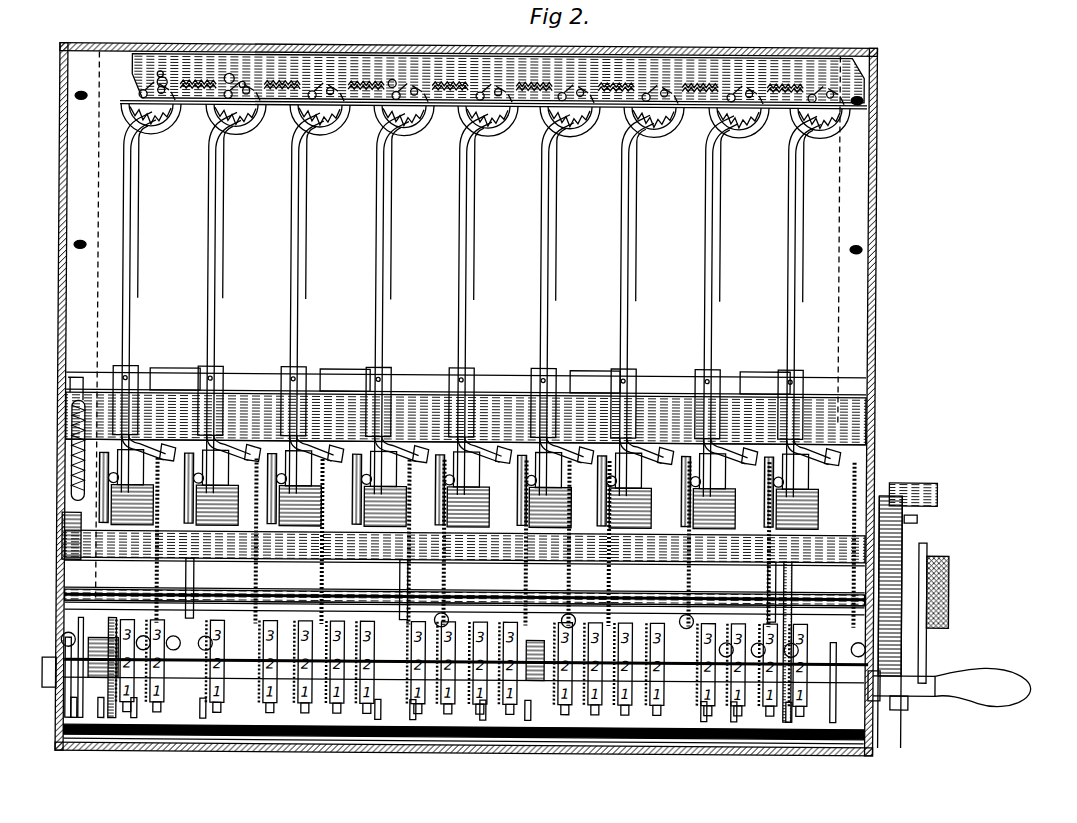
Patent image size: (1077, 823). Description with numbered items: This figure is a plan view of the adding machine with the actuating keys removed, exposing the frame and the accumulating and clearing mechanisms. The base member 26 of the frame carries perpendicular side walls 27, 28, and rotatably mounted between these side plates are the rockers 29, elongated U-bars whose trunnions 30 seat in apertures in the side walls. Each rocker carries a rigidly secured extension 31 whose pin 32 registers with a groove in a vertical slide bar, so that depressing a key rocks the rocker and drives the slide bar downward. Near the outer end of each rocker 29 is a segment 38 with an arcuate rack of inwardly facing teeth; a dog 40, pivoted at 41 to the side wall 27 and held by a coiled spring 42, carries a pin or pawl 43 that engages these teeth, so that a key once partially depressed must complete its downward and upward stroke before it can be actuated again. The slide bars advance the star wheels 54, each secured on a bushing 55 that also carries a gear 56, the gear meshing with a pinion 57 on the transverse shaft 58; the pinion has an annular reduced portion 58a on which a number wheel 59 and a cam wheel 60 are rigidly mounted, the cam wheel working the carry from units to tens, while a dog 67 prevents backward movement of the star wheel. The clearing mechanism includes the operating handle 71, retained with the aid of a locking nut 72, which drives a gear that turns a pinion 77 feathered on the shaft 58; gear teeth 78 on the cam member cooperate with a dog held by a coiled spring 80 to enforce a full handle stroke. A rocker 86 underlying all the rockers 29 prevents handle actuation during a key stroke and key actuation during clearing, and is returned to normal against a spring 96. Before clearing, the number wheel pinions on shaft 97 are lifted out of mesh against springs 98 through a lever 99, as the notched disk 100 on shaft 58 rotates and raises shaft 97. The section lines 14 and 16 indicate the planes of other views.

The section line 14 is at (40, 690).
The section line 16 is at (1043, 660).
The base member 26 is at (500, 276).
The side wall 27 is at (460, 58).
The side wall 28 is at (500, 396).
The rocker 29 is at (138, 296).
The trunnion 30 is at (530, 90).
The extension 31 is at (113, 374).
The pin 32 is at (218, 488).
The segment 38 is at (163, 128).
The dog 40 is at (227, 75).
The pivot 41 is at (160, 78).
The coiled spring 42 is at (280, 84).
The pin or pawl 43 is at (389, 80).
The star wheel 54 is at (158, 578).
The bushing 55 is at (215, 546).
The gear 56 is at (822, 495).
The pinion 57 is at (462, 657).
The transverse shaft 58 is at (535, 640).
The annular concentric reduced portion 58a is at (530, 720).
The number wheel 59 is at (206, 720).
The cam wheel 60 is at (380, 720).
The dog 67 is at (196, 576).
The operating handle 71 is at (930, 650).
The locking nut 72 is at (952, 582).
The pinion 77 is at (902, 708).
The gear teeth 78 is at (905, 575).
The coiled spring 80 is at (898, 485).
The rocker 86 is at (332, 380).
The spring 96 is at (72, 480).
The shaft 97 is at (103, 720).
The spring 98 is at (790, 600).
The lever 99 is at (76, 720).
The disk 100 is at (80, 618).